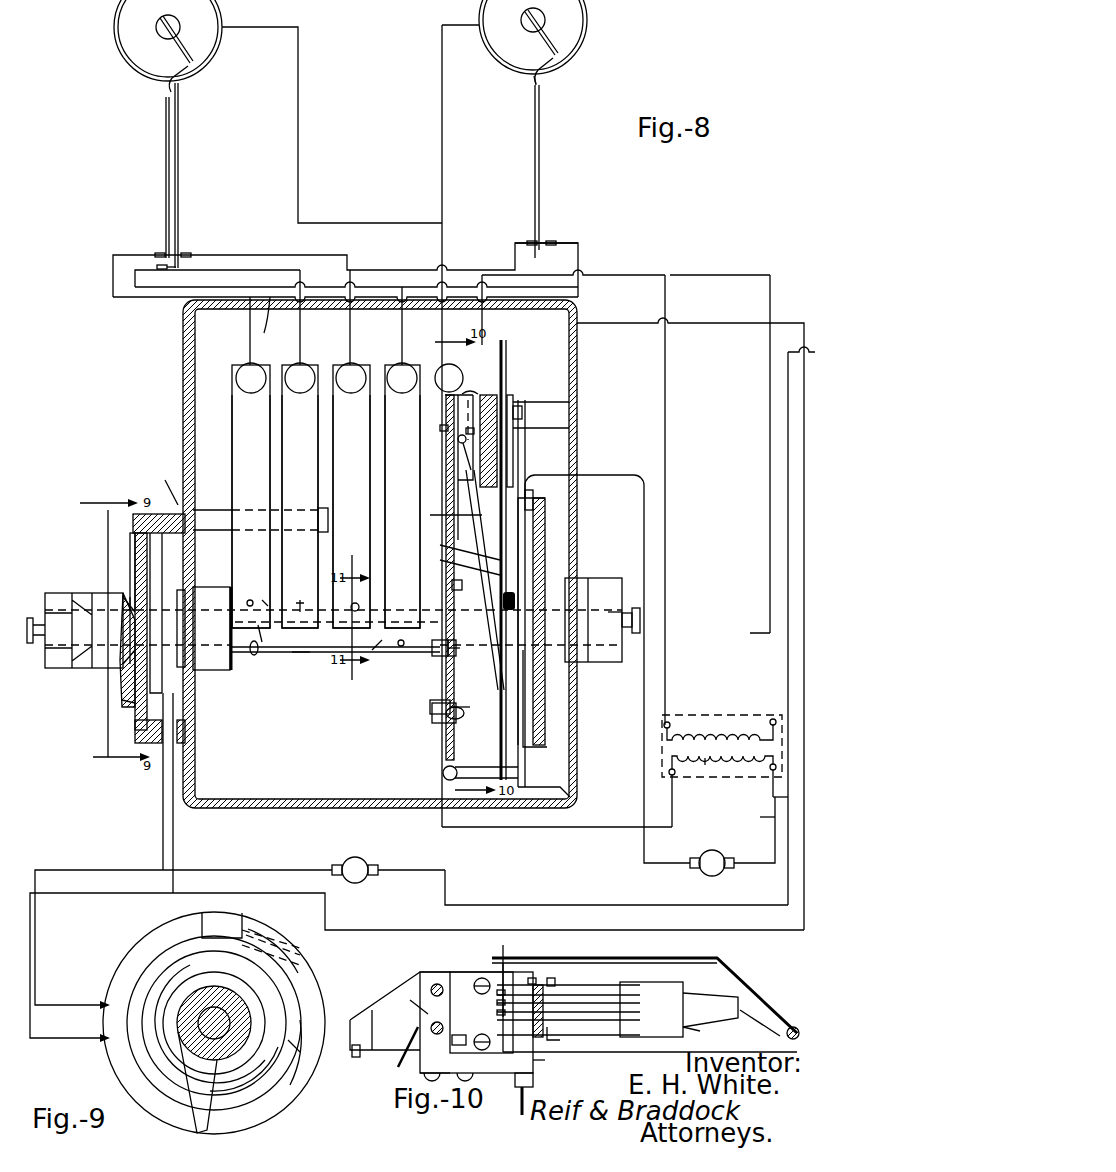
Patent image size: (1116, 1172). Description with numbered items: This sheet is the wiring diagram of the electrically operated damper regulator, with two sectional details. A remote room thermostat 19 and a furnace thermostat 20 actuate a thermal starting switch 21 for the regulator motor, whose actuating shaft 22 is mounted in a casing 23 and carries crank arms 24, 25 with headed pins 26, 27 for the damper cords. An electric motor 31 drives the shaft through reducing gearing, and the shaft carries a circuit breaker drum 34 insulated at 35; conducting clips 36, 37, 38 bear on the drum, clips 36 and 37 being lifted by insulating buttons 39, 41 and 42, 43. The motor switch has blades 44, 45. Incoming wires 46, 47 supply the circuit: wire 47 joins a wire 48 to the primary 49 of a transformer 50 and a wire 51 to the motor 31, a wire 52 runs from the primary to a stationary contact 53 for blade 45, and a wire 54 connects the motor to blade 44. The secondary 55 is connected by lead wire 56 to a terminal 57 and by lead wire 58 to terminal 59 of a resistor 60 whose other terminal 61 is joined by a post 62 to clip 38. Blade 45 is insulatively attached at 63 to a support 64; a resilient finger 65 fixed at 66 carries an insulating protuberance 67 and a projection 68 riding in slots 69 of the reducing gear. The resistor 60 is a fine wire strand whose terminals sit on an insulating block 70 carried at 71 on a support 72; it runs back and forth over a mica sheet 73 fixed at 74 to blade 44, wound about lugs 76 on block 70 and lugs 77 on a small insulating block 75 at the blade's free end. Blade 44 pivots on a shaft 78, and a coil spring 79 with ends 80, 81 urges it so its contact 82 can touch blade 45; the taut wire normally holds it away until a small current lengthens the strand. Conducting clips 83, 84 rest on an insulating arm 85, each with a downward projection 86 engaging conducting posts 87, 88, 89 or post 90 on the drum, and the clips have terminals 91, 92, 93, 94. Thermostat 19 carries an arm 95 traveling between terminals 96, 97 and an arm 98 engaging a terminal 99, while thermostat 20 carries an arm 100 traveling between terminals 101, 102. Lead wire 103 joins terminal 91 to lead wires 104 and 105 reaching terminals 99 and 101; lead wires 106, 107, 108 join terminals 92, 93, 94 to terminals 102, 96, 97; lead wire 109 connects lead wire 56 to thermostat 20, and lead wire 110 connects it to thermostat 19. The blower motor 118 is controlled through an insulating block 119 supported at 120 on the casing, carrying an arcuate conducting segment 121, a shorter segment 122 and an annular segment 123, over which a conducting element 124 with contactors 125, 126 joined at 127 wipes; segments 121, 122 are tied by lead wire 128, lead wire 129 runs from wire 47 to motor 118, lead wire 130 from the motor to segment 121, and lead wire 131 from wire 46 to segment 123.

In FIG. 8, the thermostatic element 19 is at (114, 31).
In FIG. 8, the thermostatic element 20 is at (581, 44).
In FIG. 10, the starting switch 21 is at (408, 988).
In FIG. 8, the actuating shaft 22 is at (175, 600).
In FIG. 8, the casing 23 is at (183, 408).
In FIG. 8, the crank arm 24 is at (645, 610).
In FIG. 8, the crank arm 25 is at (55, 668).
In FIG. 8, the headed pin 26 is at (642, 618).
In FIG. 8, the headed pin 27 is at (30, 618).
In FIG. 9, the headed pin 27 is at (302, 1054).
In FIG. 8, the electric motor 31 is at (725, 856).
In FIG. 8, the circuit breaker drum 34 is at (292, 657).
In FIG. 8, the insulation 35 is at (225, 672).
In FIG. 8, the conducting clip 36 is at (351, 511).
In FIG. 8, the conducting clip 37 is at (402, 511).
In FIG. 8, the conducting clip 38 is at (447, 500).
In FIG. 10, the conducting clip 38 is at (420, 1075).
In FIG. 8, the insulating button 39 is at (362, 605).
In FIG. 8, the insulating button 41 is at (378, 658).
In FIG. 8, the insulating button 42 is at (400, 648).
In FIG. 8, the insulating button 43 is at (432, 652).
In FIG. 8, the motor switch blade 44 is at (525, 560).
In FIG. 10, the motor switch blade 44 is at (520, 1060).
In FIG. 8, the motor switch blade 45 is at (505, 340).
In FIG. 10, the motor switch blade 45 is at (362, 1020).
In FIG. 8, the incoming wire 46 is at (722, 322).
In FIG. 9, the incoming wire 46 is at (312, 1047).
In FIG. 10, the incoming wire 46 is at (352, 1051).
In FIG. 8, the incoming wire 47 is at (788, 437).
In FIG. 8, the wire 48 is at (773, 792).
In FIG. 8, the primary 49 is at (708, 765).
In FIG. 8, the transformer 50 is at (705, 732).
In FIG. 8, the wire 51 is at (755, 819).
In FIG. 8, the wire 52 is at (586, 828).
In FIG. 8, the stationary contact 53 is at (458, 722).
In FIG. 8, the wire 54 is at (644, 805).
In FIG. 10, the wire 54 is at (520, 1100).
In FIG. 8, the secondary 55 is at (745, 730).
In FIG. 8, the lead wire 56 is at (442, 324).
In FIG. 8, the terminal 57 is at (443, 370).
In FIG. 8, the lead wire 58 is at (490, 322).
In FIG. 10, the lead wire 58 is at (400, 1058).
In FIG. 8, the terminal 59 is at (466, 431).
In FIG. 10, the terminal 59 is at (482, 978).
In FIG. 8, the resistor 60 is at (440, 546).
In FIG. 10, the resistor 60 is at (622, 988).
In FIG. 8, the terminal 61 is at (458, 440).
In FIG. 10, the terminal 61 is at (480, 1034).
In FIG. 8, the post 62 is at (440, 428).
In FIG. 10, the post 62 is at (505, 1075).
In FIG. 8, the insulative attachment 63 is at (514, 440).
In FIG. 8, the support 64 is at (500, 395).
In FIG. 10, the support 64 is at (760, 1012).
In FIG. 8, the resilient finger 65 is at (530, 580).
In FIG. 8, the attachment point 66 is at (525, 409).
In FIG. 10, the attachment point 66 is at (440, 983).
In FIG. 8, the insulating protuberance 67 is at (545, 585).
In FIG. 8, the projection 68 is at (615, 620).
In FIG. 8, the slots 69 is at (518, 605).
In FIG. 8, the insulating block 70 is at (455, 404).
In FIG. 10, the insulating block 70 is at (430, 972).
In FIG. 8, the mounting 71 is at (468, 390).
In FIG. 10, the mounting 71 is at (410, 1002).
In FIG. 8, the support 72 is at (436, 700).
In FIG. 8, the mica sheet 73 is at (452, 585).
In FIG. 10, the mica sheet 73 is at (650, 978).
In FIG. 8, the fixing 74 is at (440, 561).
In FIG. 10, the fixing 74 is at (585, 965).
In FIG. 8, the insulating block 75 is at (432, 707).
In FIG. 10, the insulating block 75 is at (720, 996).
In FIG. 10, the metallic lugs 76 is at (506, 975).
In FIG. 10, the metallic lugs 77 is at (690, 1029).
In FIG. 8, the shaft 78 is at (430, 516).
In FIG. 10, the shaft 78 is at (553, 976).
In FIG. 10, the coil spring 79 is at (537, 1077).
In FIG. 10, the projecting end 80 is at (532, 976).
In FIG. 10, the projecting end 81 is at (552, 1042).
In FIG. 8, the contact 82 is at (453, 657).
In FIG. 8, the conducting clip 83 is at (251, 511).
In FIG. 8, the conducting clip 84 is at (300, 511).
In FIG. 8, the insulating supporting arm 85 is at (210, 522).
In FIG. 8, the downward projection 86 is at (270, 630).
In FIG. 8, the conducting post 87 is at (246, 598).
In FIG. 8, the conducting post 88 is at (256, 657).
In FIG. 8, the conducting post 89 is at (278, 598).
In FIG. 8, the conducting post 90 is at (300, 603).
In FIG. 8, the terminal 91 is at (251, 495).
In FIG. 8, the terminal 92 is at (300, 495).
In FIG. 8, the terminal 93 is at (351, 449).
In FIG. 8, the terminal 94 is at (402, 457).
In FIG. 8, the arm 95 is at (180, 198).
In FIG. 8, the terminal 96 is at (190, 252).
In FIG. 8, the terminal 97 is at (172, 272).
In FIG. 8, the arm 98 is at (166, 212).
In FIG. 8, the terminal 99 is at (155, 252).
In FIG. 8, the arm 100 is at (541, 182).
In FIG. 8, the terminal 101 is at (557, 240).
In FIG. 8, the terminal 102 is at (528, 240).
In FIG. 8, the lead wire 103 is at (250, 346).
In FIG. 8, the lead wire 104 is at (130, 300).
In FIG. 8, the lead wire 105 is at (269, 323).
In FIG. 8, the lead wire 106 is at (466, 270).
In FIG. 8, the lead wire 107 is at (254, 258).
In FIG. 8, the lead wire 108 is at (228, 284).
In FIG. 8, the lead wire 109 is at (444, 204).
In FIG. 8, the lead wire 110 is at (300, 197).
In FIG. 8, the electric motor 118 is at (371, 866).
In FIG. 8, the insulating block 119 is at (135, 549).
In FIG. 9, the insulating block 119 is at (222, 908).
In FIG. 8, the support 120 is at (163, 483).
In FIG. 8, the arcuate conducting segment 121 is at (133, 527).
In FIG. 9, the arcuate conducting segment 121 is at (145, 952).
In FIG. 8, the conducting segment 122 is at (135, 736).
In FIG. 9, the conducting segment 122 is at (280, 937).
In FIG. 8, the annular conducting segment 123 is at (130, 561).
In FIG. 9, the annular conducting segment 123 is at (152, 988).
In FIG. 8, the conducting element 124 is at (123, 597).
In FIG. 9, the conducting element 124 is at (190, 1066).
In FIG. 8, the contactor 125 is at (122, 675).
In FIG. 9, the contactor 125 is at (275, 992).
In FIG. 8, the contactor 126 is at (128, 700).
In FIG. 9, the contactor 126 is at (300, 1002).
In FIG. 9, the connection 127 is at (205, 1132).
In FIG. 8, the lead wire 128 is at (176, 755).
In FIG. 9, the lead wire 128 is at (242, 912).
In FIG. 8, the lead wire 129 is at (445, 900).
In FIG. 8, the lead wire 130 is at (318, 868).
In FIG. 9, the lead wire 130 is at (35, 944).
In FIG. 8, the lead wire 131 is at (178, 834).
In FIG. 9, the lead wire 131 is at (35, 1022).